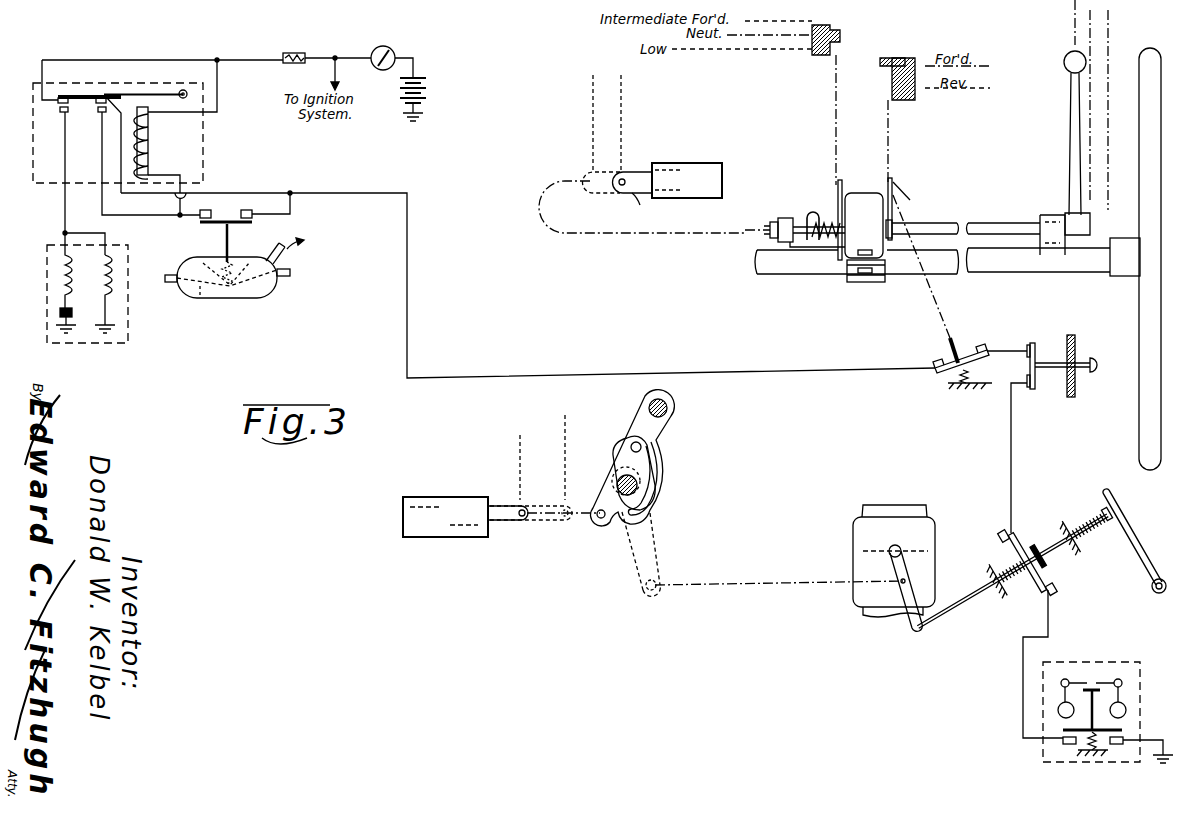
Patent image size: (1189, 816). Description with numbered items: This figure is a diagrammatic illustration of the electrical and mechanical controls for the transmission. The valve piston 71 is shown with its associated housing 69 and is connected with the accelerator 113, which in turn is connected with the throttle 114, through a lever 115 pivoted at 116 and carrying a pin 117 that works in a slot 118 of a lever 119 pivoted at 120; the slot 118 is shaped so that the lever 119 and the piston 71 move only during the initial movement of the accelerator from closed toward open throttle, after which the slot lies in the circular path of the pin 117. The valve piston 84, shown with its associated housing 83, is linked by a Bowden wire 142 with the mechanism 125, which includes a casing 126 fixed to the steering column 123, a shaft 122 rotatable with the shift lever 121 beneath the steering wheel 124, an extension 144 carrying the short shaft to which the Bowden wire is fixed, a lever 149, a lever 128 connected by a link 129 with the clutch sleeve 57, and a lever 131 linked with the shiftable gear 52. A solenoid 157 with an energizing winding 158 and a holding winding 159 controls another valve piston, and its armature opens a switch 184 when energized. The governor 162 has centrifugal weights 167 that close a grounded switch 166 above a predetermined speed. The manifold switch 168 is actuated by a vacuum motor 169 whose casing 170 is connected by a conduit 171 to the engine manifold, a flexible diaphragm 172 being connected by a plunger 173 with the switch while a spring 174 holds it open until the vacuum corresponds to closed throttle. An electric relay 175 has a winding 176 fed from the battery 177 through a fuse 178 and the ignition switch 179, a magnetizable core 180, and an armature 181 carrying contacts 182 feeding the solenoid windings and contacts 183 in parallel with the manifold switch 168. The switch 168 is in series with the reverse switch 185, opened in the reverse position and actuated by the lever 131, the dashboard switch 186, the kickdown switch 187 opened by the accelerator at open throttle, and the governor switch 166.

The clutch sleeve 57 is at (830, 28).
The gear 52 is at (900, 58).
The shift lever actuator 83 is at (690, 163).
The valve piston 84 is at (644, 207).
The Bowden wire 142 is at (642, 234).
The extension of the casing 144 is at (780, 219).
The lever 149 is at (812, 214).
The shaft 122 is at (1002, 220).
The steering column 123 is at (794, 276).
The mechanism 125 is at (872, 183).
The casing 126 is at (855, 192).
The lever 128 is at (836, 180).
The link 129 is at (834, 110).
The lever 131 is at (894, 179).
The shift lever 121 is at (1066, 68).
The steering wheel 124 is at (1148, 47).
The reverse switch 185 is at (970, 348).
The switch 186 is at (1029, 342).
The kickdown switch 187 is at (1025, 532).
The accelerator 113 is at (1124, 520).
The throttle 114 is at (853, 525).
The lever 115 is at (656, 493).
The pivot 116 is at (640, 497).
The pin 117 is at (641, 447).
The slot 118 is at (660, 481).
The lever 119 is at (665, 428).
The pivot 120 is at (668, 407).
The throttle actuator 69 is at (447, 490).
The valve piston 71 is at (500, 525).
The governor 162 is at (1148, 680).
The governor switch 166 is at (1062, 746).
The centrifugal weights 167 is at (1126, 711).
The electric solenoid 157 is at (128, 320).
The energizing winding 158 is at (65, 257).
The holding winding 159 is at (110, 262).
The switch 184 is at (75, 330).
The manifold switch 168 is at (198, 224).
The motor 169 is at (275, 279).
The casing 170 is at (242, 298).
The conduit 171 is at (287, 258).
The flexible diaphragm 172 is at (200, 299).
The plunger 173 is at (224, 243).
The spring 174 is at (236, 257).
The electric relay 175 is at (204, 123).
The winding 176 is at (150, 138).
The magnetizable core 180 is at (150, 154).
The armature 181 is at (135, 93).
The contacts 182 is at (59, 112).
The contacts 183 is at (99, 112).
The battery 177 is at (428, 84).
The fuse 178 is at (306, 52).
The ignition switch 179 is at (392, 48).